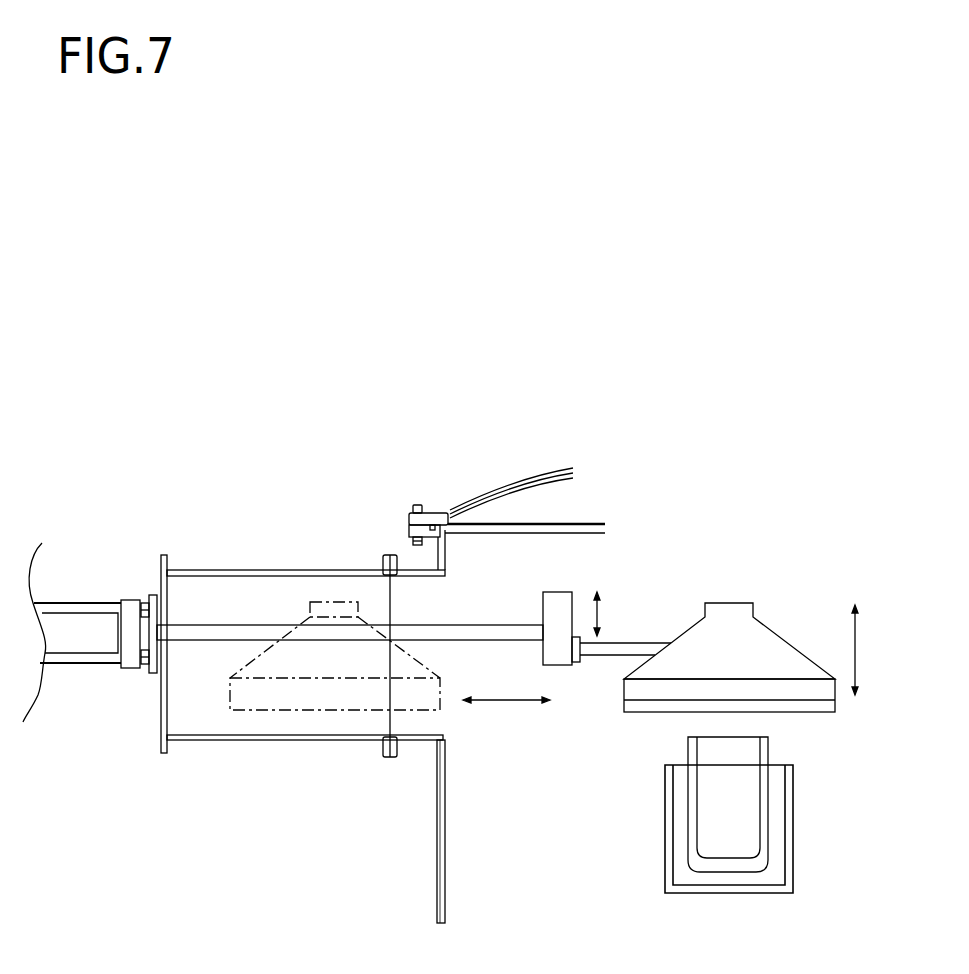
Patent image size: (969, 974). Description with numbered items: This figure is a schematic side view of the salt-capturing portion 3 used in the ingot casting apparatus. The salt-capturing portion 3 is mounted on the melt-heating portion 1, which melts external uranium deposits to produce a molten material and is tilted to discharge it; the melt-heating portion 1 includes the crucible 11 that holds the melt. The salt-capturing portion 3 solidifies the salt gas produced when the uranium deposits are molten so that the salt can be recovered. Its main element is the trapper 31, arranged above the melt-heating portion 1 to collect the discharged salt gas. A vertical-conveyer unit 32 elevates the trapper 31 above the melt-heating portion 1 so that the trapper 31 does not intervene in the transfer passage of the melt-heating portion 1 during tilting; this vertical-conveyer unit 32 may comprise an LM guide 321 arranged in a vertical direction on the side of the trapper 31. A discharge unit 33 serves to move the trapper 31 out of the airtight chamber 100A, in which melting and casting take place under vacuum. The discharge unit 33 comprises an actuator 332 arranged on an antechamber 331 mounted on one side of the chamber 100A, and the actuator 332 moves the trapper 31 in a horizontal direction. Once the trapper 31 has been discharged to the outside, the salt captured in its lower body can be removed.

The salt-capturing portion 3 is at (95, 304).
The discharge unit 33 is at (192, 453).
The antechamber 331 is at (193, 587).
The actuator 332 is at (76, 605).
The vertical-conveyer unit 32 is at (548, 557).
The LM guide 321 is at (570, 603).
The trapper 31 is at (760, 635).
The crucible 11 is at (765, 745).
The melt-heating portion 1 is at (793, 815).
The chamber 100A is at (440, 865).